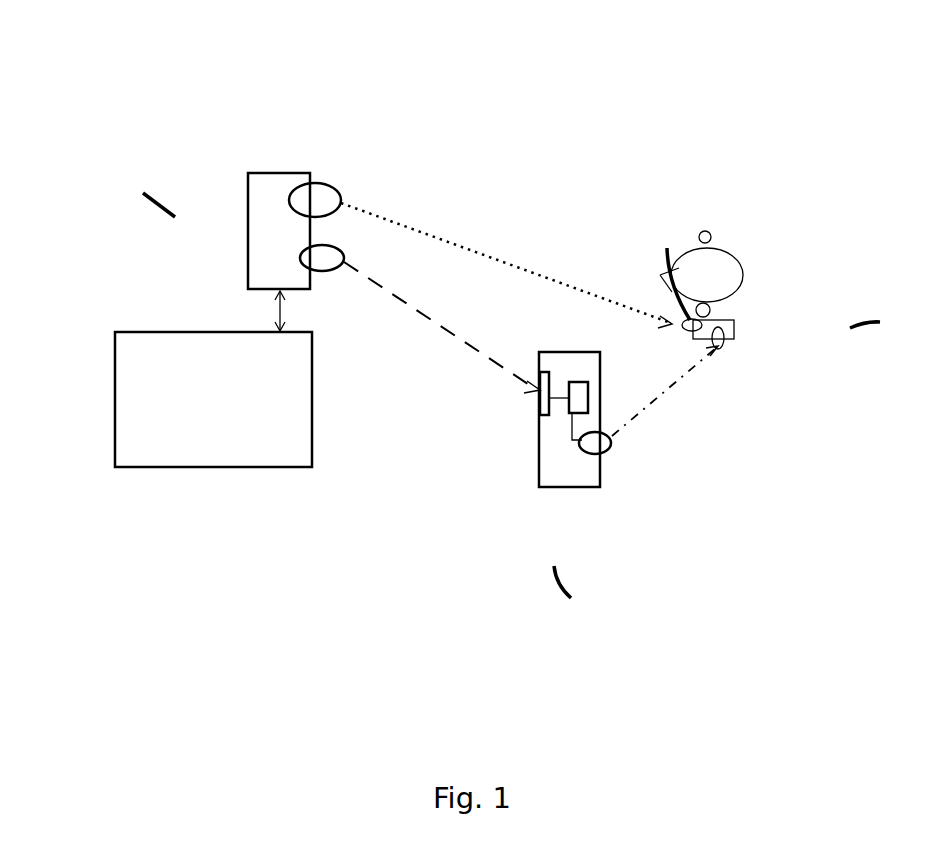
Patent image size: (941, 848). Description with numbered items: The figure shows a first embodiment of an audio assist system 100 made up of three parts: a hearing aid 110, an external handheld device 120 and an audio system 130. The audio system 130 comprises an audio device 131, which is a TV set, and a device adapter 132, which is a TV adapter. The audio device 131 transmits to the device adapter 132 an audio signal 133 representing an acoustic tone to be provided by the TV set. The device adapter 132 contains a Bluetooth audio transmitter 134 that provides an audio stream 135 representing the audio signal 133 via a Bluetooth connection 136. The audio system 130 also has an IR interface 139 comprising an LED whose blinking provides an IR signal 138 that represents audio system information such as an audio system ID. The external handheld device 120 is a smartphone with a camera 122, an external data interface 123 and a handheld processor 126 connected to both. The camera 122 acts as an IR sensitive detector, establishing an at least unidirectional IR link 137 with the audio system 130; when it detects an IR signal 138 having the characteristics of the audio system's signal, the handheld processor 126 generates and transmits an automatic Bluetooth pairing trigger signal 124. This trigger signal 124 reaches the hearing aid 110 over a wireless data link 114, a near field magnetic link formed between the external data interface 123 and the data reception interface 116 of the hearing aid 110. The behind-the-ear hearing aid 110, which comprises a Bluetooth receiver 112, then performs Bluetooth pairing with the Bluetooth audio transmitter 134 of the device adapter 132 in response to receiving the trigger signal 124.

The audio assist system 100 is at (235, 78).
The hearing aid 110 is at (732, 327).
The Bluetooth receiver 112 is at (667, 256).
The wireless data link 114 is at (660, 417).
The data reception interface 116 is at (723, 346).
The external handheld device 120 is at (553, 478).
The camera 122 is at (544, 402).
The external data interface 123 is at (600, 451).
The automatic Bluetooth pairing trigger signal 124 is at (684, 383).
The handheld processor 126 is at (578, 400).
The audio system 130 is at (154, 278).
The audio device 131 is at (138, 405).
The device adapter 132 is at (258, 222).
The audio signal 133 is at (277, 311).
The Bluetooth audio transmitter 134 is at (320, 196).
The audio stream 135 is at (437, 236).
The Bluetooth connection 136 is at (530, 258).
The IR link 137 is at (398, 311).
The IR signal 138 is at (449, 337).
The IR interface 139 is at (324, 265).